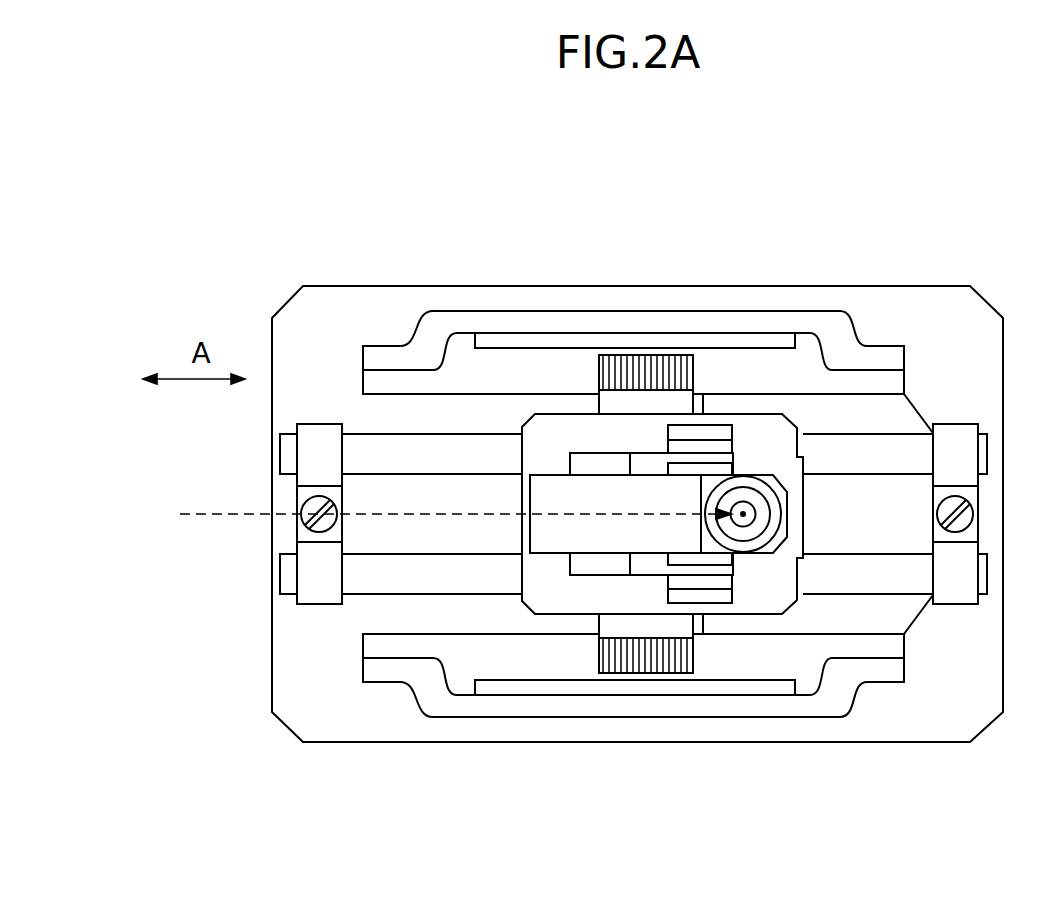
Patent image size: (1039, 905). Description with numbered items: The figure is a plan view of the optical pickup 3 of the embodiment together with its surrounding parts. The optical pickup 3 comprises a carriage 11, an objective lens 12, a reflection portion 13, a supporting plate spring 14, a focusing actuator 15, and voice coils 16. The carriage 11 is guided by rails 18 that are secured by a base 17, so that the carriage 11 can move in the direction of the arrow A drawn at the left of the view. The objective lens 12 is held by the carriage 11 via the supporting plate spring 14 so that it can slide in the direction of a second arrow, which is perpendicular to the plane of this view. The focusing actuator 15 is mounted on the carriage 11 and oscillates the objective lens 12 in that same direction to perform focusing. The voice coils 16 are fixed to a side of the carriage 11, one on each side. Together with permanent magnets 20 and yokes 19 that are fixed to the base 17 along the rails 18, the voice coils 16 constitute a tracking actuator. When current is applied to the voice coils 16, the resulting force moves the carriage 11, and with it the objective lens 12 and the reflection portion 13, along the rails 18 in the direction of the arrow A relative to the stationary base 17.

The optical pickup 3 is at (675, 516).
The carriage 11 is at (539, 432).
The objective lens 12 is at (770, 553).
The reflection portion 13 is at (757, 463).
The supporting plate spring 14 is at (647, 543).
The focusing actuator 15 is at (700, 445).
The voice coils 16 is at (636, 372).
The base 17 is at (895, 330).
The rails 18 is at (290, 452).
The yokes 19 is at (377, 390).
The permanent magnets 20 is at (543, 342).